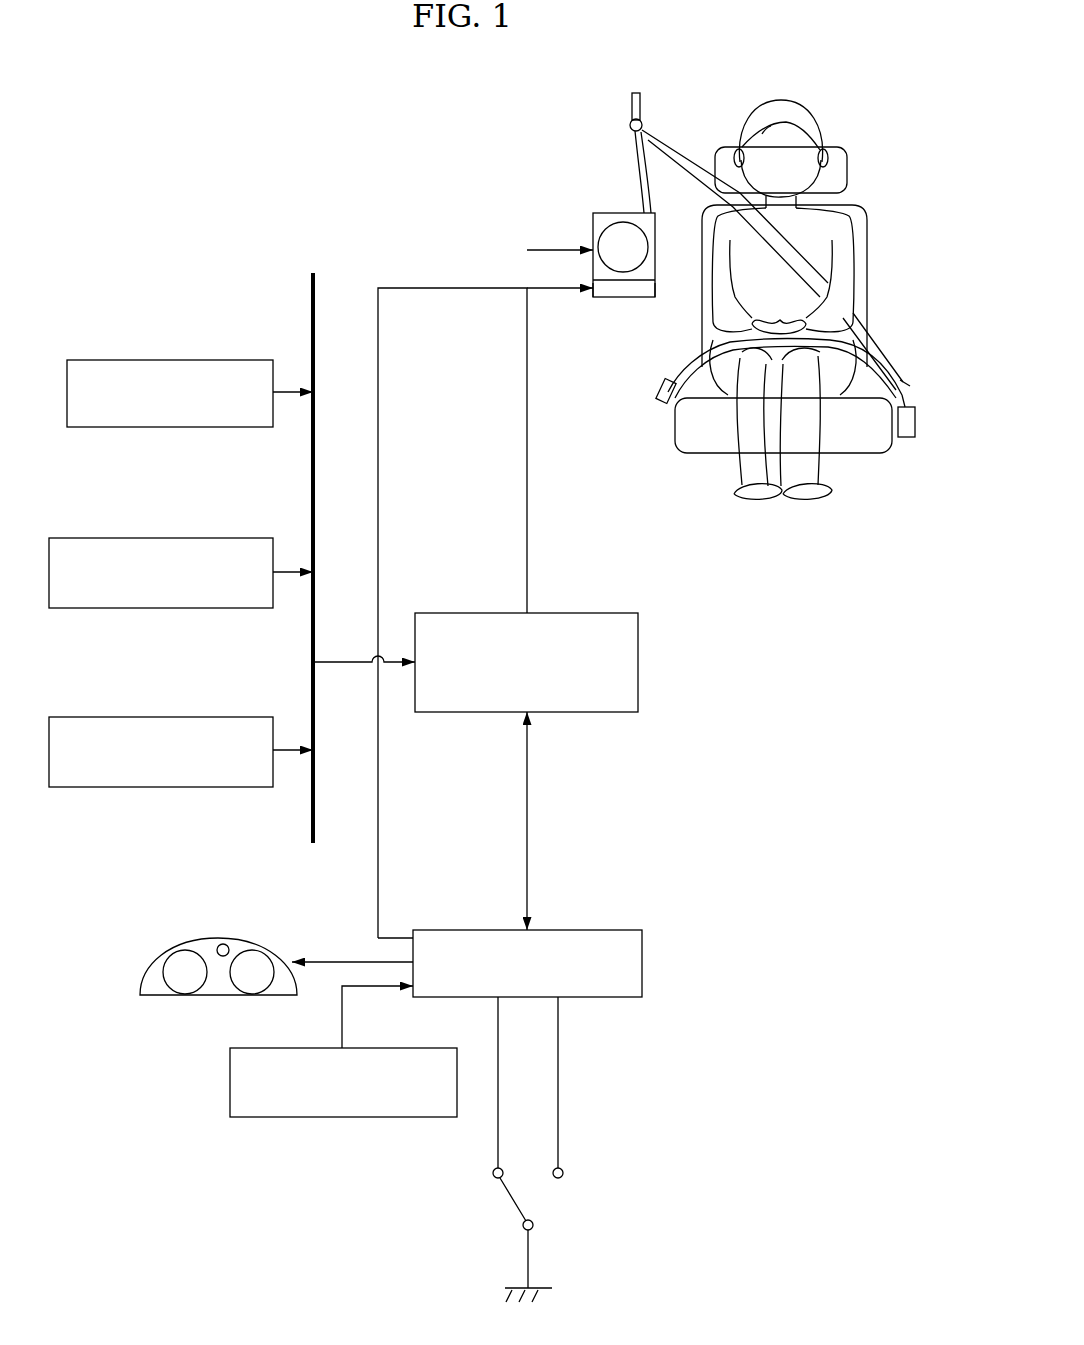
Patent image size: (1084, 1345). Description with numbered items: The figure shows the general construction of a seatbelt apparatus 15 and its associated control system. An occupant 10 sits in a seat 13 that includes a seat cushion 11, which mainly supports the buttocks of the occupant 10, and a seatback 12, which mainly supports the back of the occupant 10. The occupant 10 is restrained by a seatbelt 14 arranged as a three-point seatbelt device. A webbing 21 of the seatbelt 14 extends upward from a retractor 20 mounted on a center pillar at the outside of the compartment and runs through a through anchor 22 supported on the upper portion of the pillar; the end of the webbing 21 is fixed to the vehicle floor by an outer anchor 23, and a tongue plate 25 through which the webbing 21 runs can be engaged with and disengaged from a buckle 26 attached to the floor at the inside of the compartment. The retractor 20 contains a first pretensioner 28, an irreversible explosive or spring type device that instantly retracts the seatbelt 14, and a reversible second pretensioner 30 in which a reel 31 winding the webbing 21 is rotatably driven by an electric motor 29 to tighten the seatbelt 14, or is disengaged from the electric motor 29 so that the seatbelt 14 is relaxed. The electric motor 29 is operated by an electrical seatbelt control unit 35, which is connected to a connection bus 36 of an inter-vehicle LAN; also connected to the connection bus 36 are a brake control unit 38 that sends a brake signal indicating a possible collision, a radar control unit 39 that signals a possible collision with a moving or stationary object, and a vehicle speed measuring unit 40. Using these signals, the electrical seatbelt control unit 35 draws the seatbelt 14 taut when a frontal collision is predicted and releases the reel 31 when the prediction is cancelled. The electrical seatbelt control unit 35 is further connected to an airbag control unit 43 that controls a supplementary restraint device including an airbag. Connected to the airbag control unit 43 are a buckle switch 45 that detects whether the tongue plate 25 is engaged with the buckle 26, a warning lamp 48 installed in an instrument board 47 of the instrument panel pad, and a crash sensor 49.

The occupant 10 is at (812, 104).
The seat cushion 11 is at (707, 453).
The seatback 12 is at (870, 243).
The seat 13 is at (804, 350).
The seatbelt 14 is at (696, 168).
The seatbelt apparatus 15 is at (918, 382).
The retractor 20 is at (728, 291).
The webbing 21 is at (887, 337).
The through anchor 22 is at (642, 120).
The outer anchor 23 is at (663, 405).
The tongue plate 25 is at (917, 407).
The buckle 26 is at (905, 437).
The first pretensioner 28 is at (603, 297).
The electric motor 29 is at (655, 280).
The second pretensioner 30 is at (617, 266).
The reel 31 is at (623, 268).
The electrical seatbelt control unit 35 is at (583, 712).
The connection bus 36 is at (313, 296).
The brake control unit 38 is at (160, 360).
The radar control unit 39 is at (160, 538).
The vehicle speed measuring unit 40 is at (160, 717).
The airbag control unit 43 is at (642, 965).
The buckle switch 45 is at (545, 1200).
The instrument board 47 is at (260, 926).
The warning lamp 48 is at (223, 944).
The crash sensor 49 is at (333, 1117).